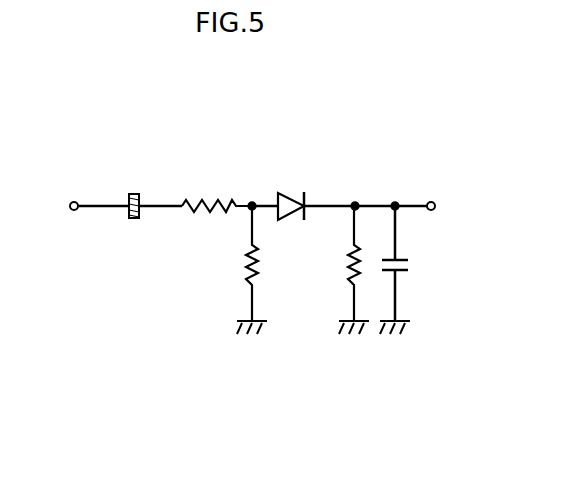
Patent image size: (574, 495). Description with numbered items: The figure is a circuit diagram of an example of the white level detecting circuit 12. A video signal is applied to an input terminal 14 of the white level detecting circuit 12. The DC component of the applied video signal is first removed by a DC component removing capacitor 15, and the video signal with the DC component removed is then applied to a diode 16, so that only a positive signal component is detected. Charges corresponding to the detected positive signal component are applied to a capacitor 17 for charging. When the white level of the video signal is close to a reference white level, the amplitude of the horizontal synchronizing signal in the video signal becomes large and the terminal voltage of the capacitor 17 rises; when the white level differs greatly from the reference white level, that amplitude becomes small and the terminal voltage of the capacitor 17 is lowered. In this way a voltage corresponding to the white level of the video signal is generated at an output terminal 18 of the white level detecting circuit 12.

The white level detecting circuit 12 is at (361, 173).
The input terminal 14 is at (72, 212).
The DC component removing capacitor 15 is at (134, 220).
The diode 16 is at (291, 190).
The capacitor 17 is at (410, 264).
The output terminal 18 is at (433, 201).